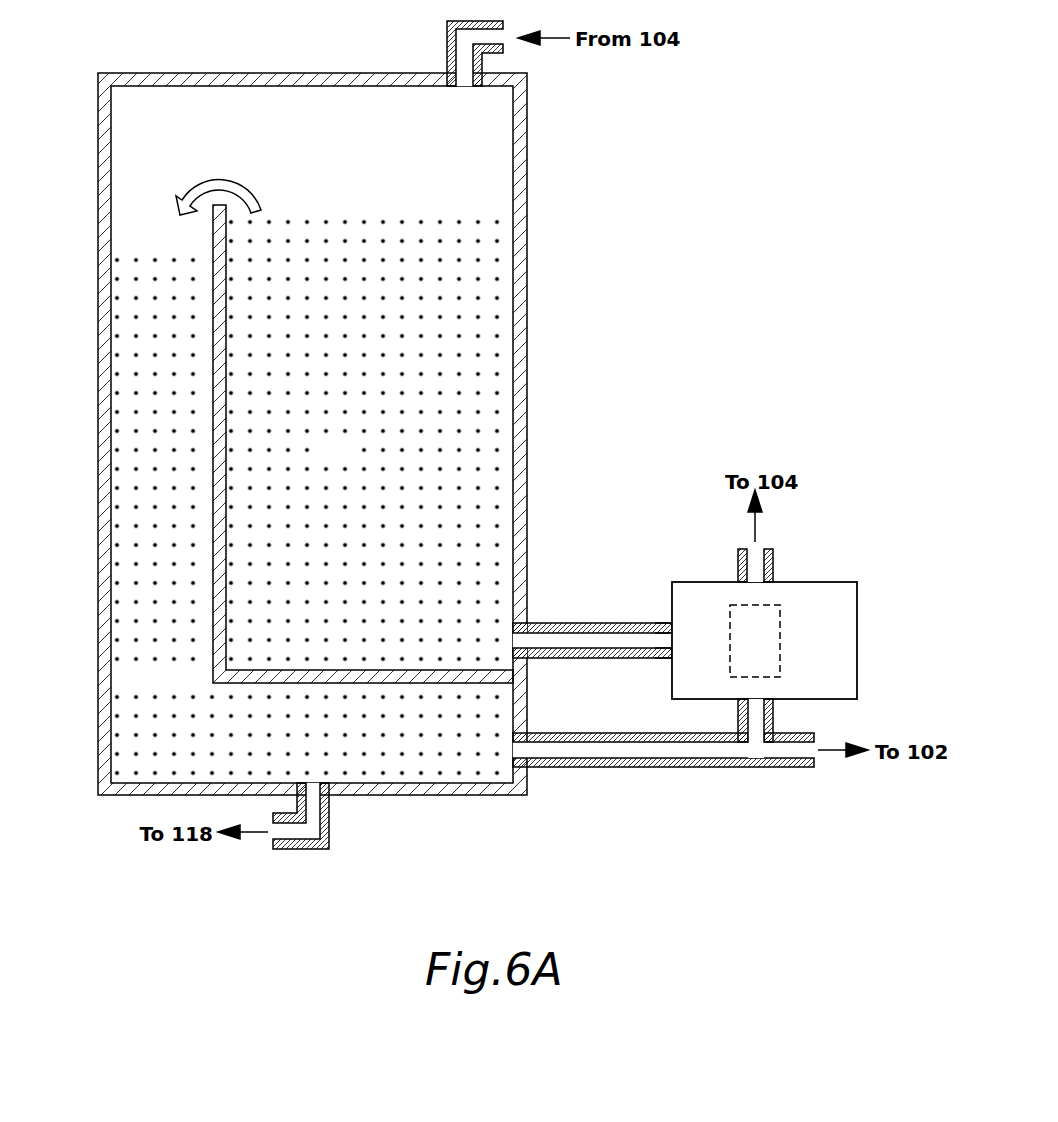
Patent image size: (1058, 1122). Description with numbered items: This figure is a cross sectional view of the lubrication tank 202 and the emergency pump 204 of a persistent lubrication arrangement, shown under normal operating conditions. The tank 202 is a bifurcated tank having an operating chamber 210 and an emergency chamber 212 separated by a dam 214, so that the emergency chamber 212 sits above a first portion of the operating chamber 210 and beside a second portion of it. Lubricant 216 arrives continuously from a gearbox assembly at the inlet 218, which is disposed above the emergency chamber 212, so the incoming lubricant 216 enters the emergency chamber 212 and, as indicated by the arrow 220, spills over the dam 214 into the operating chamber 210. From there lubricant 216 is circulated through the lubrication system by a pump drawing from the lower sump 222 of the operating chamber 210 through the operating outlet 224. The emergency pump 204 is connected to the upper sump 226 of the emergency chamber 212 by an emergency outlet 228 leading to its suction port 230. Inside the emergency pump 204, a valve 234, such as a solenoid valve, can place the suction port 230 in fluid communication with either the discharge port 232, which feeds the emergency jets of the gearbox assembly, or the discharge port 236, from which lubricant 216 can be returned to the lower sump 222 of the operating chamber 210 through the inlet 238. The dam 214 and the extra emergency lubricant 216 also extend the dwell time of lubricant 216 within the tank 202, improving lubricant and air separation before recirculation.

The tank 202 is at (527, 175).
The emergency pump 204 is at (857, 615).
The operating chamber 210 is at (132, 307).
The emergency chamber 212 is at (500, 302).
The dam 214 is at (232, 246).
The lubricant 216 is at (351, 461).
The inlet 218 is at (447, 40).
The arrow 220 is at (202, 182).
The lower sump 222 is at (456, 758).
The operating outlet 224 is at (330, 830).
The upper sump 226 is at (455, 640).
The emergency outlet 228 is at (535, 623).
The suction port 230 is at (668, 623).
The discharge port 232 is at (738, 568).
The valve 234 is at (780, 638).
The discharge port 236 is at (738, 708).
The inlet 238 is at (538, 768).